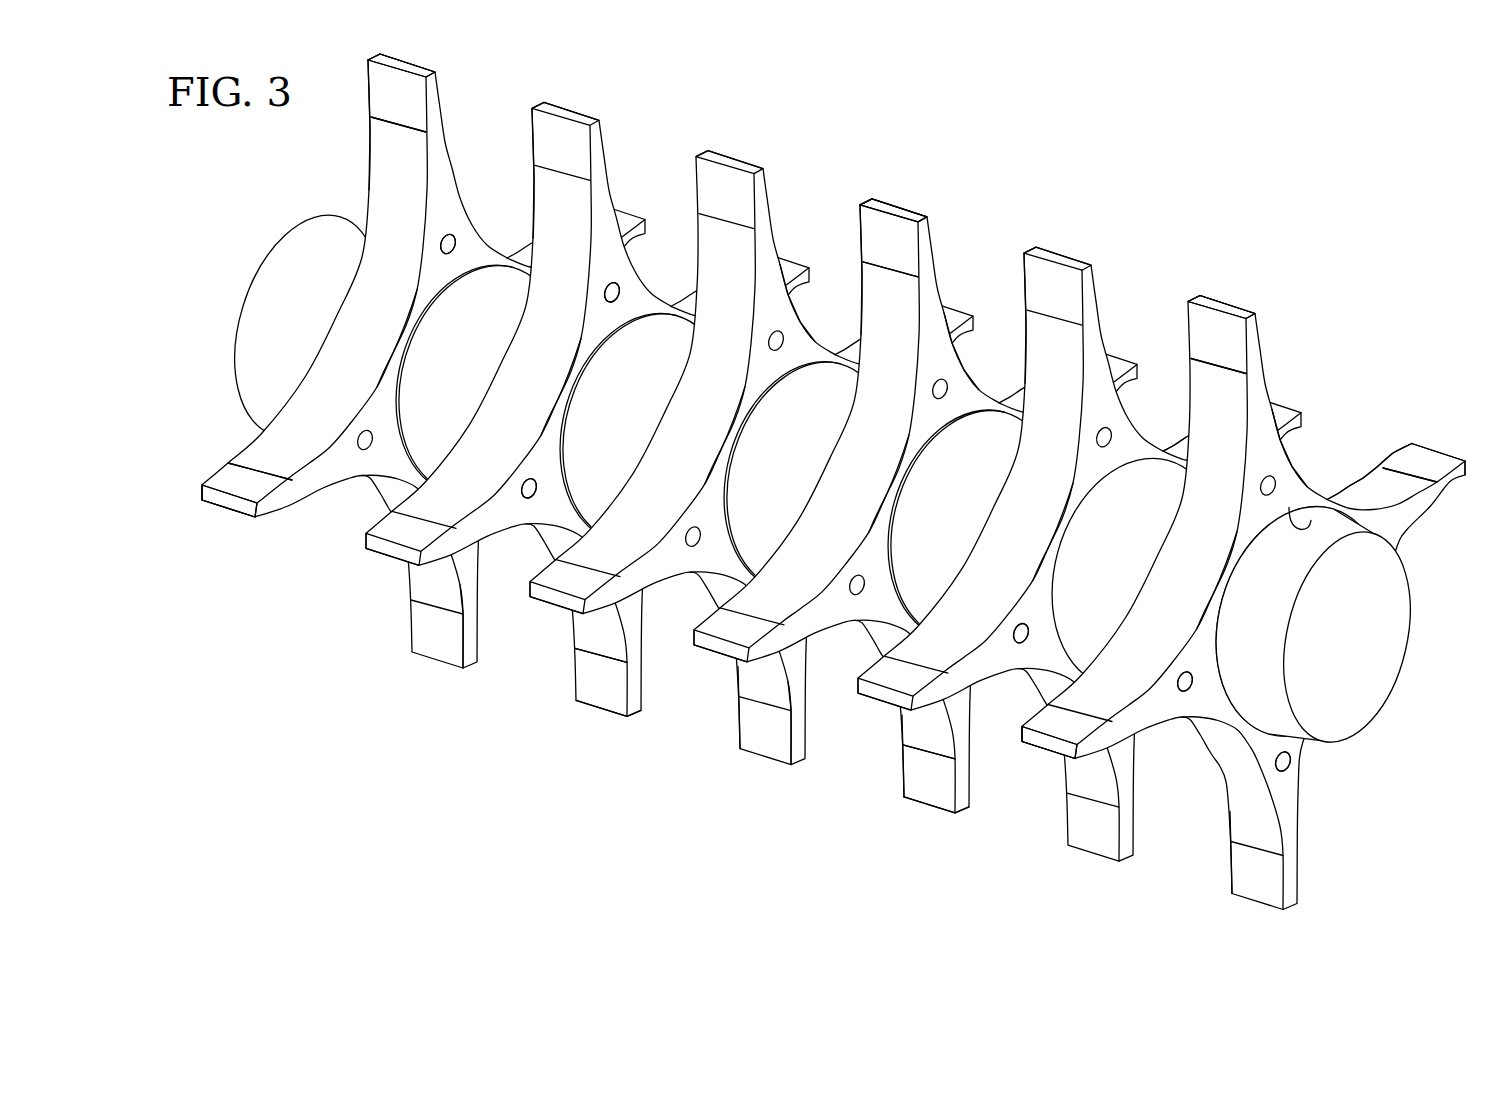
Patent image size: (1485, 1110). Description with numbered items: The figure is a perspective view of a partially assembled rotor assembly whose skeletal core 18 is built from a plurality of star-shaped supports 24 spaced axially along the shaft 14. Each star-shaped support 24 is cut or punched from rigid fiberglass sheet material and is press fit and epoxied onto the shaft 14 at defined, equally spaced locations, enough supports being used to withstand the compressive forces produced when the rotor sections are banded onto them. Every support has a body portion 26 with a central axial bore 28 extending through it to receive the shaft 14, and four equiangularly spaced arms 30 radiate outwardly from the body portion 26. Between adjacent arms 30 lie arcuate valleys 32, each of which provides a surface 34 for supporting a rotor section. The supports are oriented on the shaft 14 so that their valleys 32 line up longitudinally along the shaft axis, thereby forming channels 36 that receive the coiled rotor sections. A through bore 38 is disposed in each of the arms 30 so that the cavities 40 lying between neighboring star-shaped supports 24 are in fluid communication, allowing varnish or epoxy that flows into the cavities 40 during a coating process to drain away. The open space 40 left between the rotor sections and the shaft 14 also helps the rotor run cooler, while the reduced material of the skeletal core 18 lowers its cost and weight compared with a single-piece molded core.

The shaft 14 is at (1367, 735).
The core 18 is at (833, 482).
The star-shaped support 24 is at (752, 152).
The body portion 26 is at (790, 333).
The central axial bore 28 is at (1150, 460).
The arm 30 is at (437, 100).
The arcuate valley 32 is at (372, 262).
The surface 34 is at (368, 347).
The channel 36 is at (247, 243).
The through bore 38 is at (455, 236).
The cavity 40 is at (460, 403).